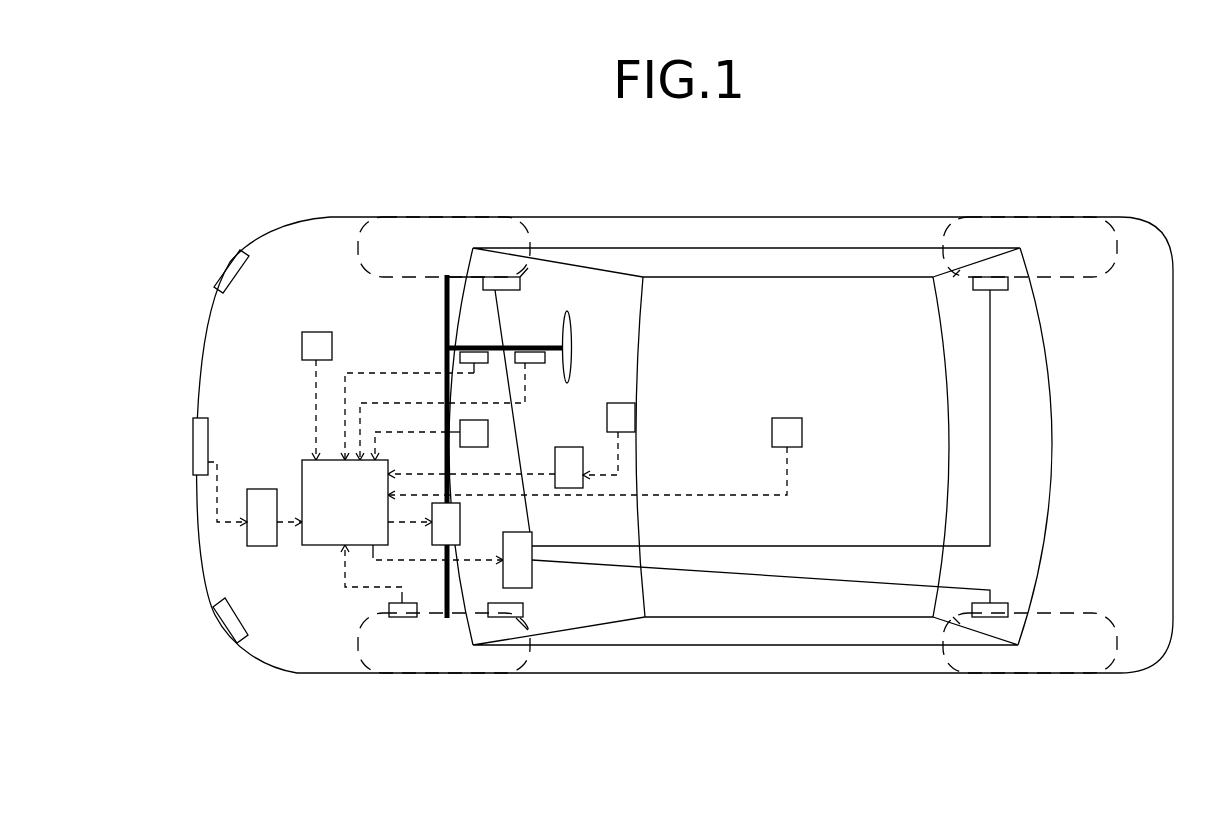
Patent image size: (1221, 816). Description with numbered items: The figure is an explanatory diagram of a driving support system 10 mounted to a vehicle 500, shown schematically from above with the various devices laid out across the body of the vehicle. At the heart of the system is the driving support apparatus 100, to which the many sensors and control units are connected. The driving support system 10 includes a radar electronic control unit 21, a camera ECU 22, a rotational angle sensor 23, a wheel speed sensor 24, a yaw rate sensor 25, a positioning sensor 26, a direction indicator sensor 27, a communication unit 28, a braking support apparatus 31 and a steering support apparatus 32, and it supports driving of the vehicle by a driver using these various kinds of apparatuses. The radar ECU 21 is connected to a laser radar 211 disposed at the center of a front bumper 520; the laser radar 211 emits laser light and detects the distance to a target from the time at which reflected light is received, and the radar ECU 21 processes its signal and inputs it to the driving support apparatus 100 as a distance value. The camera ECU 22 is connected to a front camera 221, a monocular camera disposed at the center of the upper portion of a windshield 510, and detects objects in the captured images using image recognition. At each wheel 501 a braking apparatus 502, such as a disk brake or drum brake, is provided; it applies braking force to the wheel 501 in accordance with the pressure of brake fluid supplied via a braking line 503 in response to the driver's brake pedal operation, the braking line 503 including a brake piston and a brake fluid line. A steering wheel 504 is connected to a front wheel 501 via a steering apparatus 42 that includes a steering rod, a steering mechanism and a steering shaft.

The vehicle 500 is at (759, 209).
The wheel 501 is at (430, 218).
The braking apparatus 502 is at (500, 290).
The braking line 503 is at (510, 450).
The steering wheel 504 is at (572, 347).
The windshield 510 is at (627, 376).
The front bumper 520 is at (207, 317).
The laser radar 211 is at (198, 448).
The front camera 221 is at (628, 417).
The driving support system 10 is at (310, 640).
The driving support apparatus 100 is at (345, 502).
The radar electronic control unit (ECU) 21 is at (255, 504).
The camera ECU 22 is at (485, 467).
The rotational angle sensor 23 is at (426, 406).
The wheel speed sensor 24 is at (390, 610).
The yaw rate sensor 25 is at (595, 456).
The positioning sensor 26 is at (431, 440).
The direction indicator sensor 27 is at (533, 366).
The communication unit 28 is at (317, 396).
The braking support apparatus 31 is at (452, 560).
The steering support apparatus 32 is at (424, 524).
The steering apparatus 42 is at (447, 352).